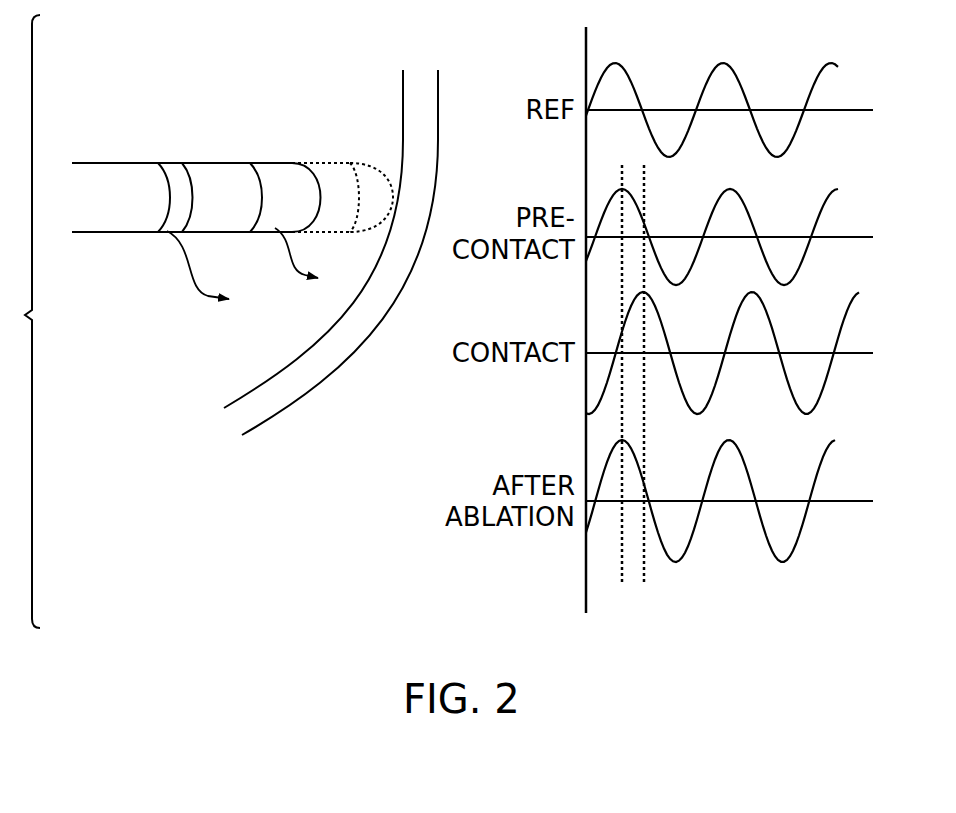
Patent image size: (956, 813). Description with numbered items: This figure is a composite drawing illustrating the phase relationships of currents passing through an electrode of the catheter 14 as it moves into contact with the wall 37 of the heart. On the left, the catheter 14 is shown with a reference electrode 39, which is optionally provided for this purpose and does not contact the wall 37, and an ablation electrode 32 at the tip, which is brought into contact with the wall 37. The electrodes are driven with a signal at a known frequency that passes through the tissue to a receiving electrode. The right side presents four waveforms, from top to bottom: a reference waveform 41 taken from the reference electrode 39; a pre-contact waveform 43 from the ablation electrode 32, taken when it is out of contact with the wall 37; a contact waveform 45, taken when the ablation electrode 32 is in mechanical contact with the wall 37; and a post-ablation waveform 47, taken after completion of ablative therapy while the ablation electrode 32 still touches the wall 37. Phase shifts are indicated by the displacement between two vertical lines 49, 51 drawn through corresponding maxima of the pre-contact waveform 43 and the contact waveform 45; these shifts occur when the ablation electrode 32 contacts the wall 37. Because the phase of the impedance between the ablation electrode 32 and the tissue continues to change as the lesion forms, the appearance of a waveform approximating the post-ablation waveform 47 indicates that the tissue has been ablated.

The catheter 14 is at (98, 163).
The reference electrode 39 is at (163, 163).
The ablation electrode 32 is at (270, 163).
The wall 37 is at (303, 380).
The reference waveform 41 is at (688, 58).
The pre-contact waveform 43 is at (698, 216).
The contact waveform 45 is at (716, 340).
The post-ablation waveform 47 is at (805, 473).
The vertical line 49 is at (622, 577).
The vertical line 51 is at (644, 572).